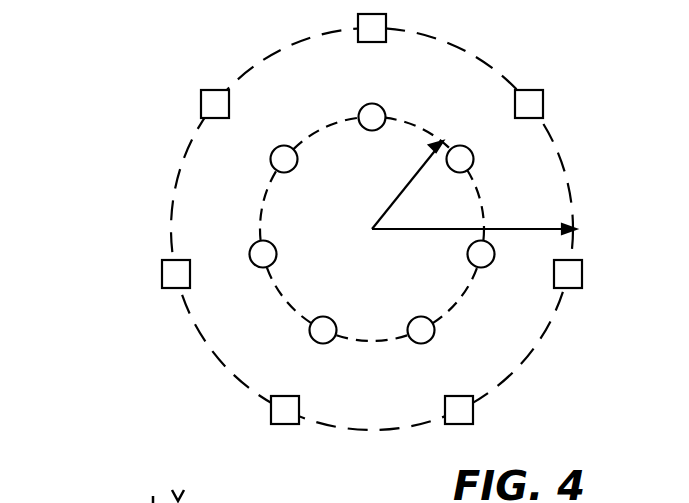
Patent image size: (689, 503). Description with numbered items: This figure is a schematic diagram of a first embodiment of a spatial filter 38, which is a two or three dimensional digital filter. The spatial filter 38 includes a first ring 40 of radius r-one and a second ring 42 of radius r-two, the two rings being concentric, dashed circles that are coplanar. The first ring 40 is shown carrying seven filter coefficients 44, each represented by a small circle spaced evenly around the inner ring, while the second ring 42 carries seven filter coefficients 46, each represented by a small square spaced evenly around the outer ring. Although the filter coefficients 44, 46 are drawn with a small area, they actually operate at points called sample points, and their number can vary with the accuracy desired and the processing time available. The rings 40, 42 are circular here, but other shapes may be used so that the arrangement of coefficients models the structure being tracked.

The spatial filter 38 is at (147, 78).
The first ring 40 is at (266, 198).
The second ring 42 is at (203, 340).
The filter coefficients 44 is at (286, 146).
The filter coefficients 46 is at (272, 416).